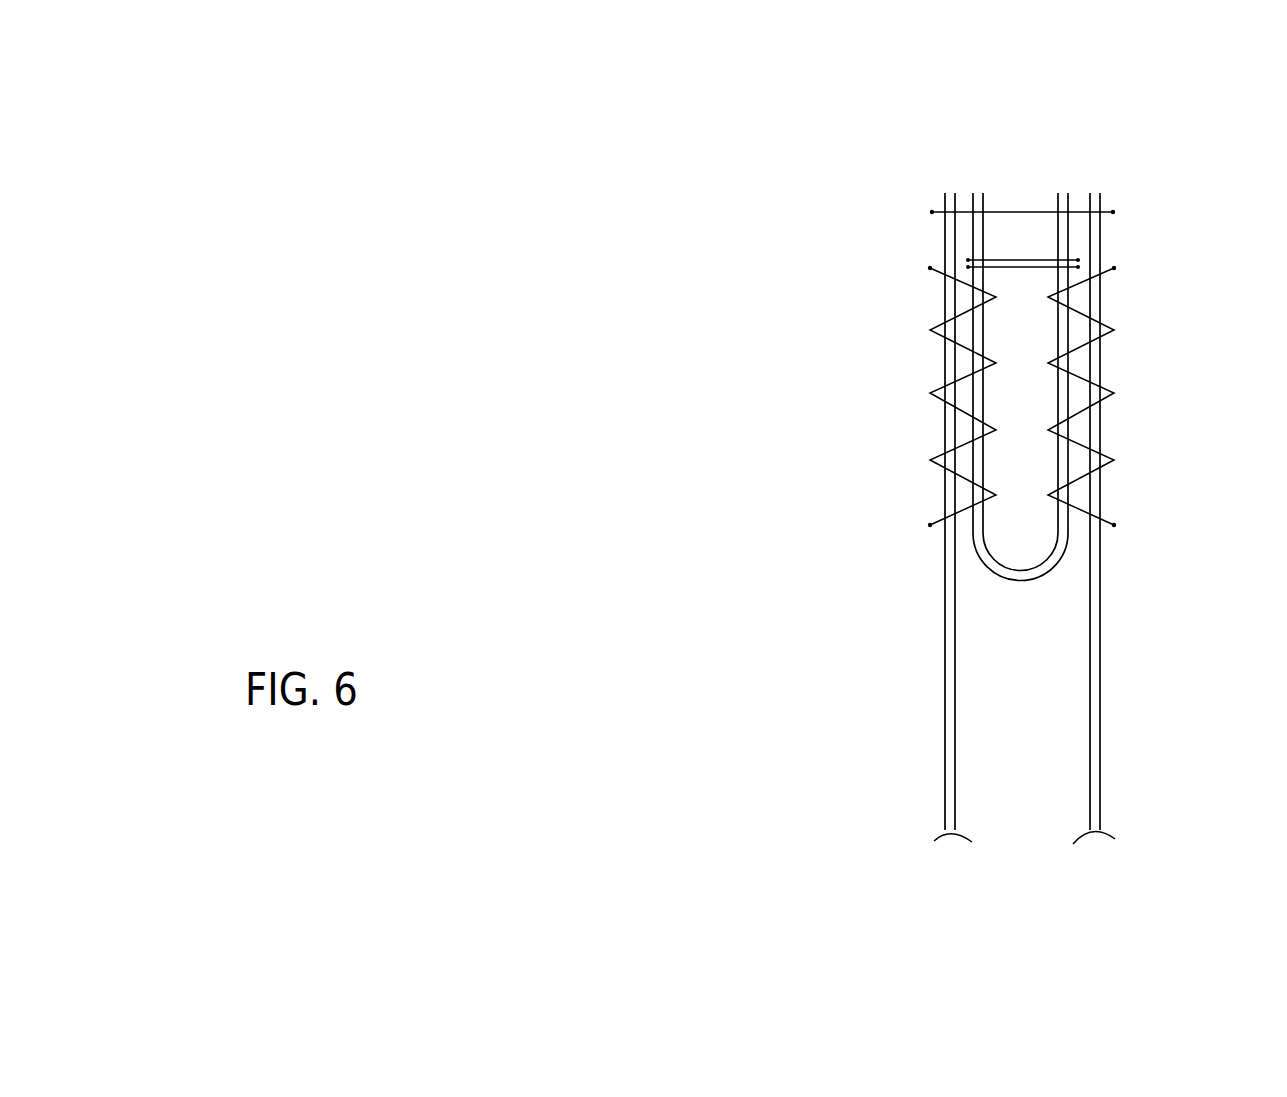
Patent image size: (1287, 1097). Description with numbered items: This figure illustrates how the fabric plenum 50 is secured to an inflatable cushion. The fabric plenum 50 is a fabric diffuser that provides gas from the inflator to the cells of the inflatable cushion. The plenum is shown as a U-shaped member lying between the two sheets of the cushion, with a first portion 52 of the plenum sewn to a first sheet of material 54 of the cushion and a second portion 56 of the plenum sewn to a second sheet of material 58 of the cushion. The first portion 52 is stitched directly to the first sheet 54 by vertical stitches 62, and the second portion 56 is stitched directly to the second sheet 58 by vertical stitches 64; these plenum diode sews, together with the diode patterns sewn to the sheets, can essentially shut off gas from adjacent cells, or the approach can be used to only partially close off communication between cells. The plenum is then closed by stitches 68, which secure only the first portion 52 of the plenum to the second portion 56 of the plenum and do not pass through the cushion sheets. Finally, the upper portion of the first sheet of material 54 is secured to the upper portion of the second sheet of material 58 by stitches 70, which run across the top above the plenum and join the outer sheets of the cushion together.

The fabric plenum 50 is at (968, 564).
The first portion of the plenum 52 is at (958, 403).
The first sheet of material 54 is at (944, 640).
The second portion of the plenum 56 is at (1100, 378).
The second sheet of material 58 is at (1100, 648).
The vertical stitches 62 is at (950, 347).
The vertical stitches 64 is at (1100, 320).
The stitches 68 is at (1028, 260).
The stitches 70 is at (1010, 210).